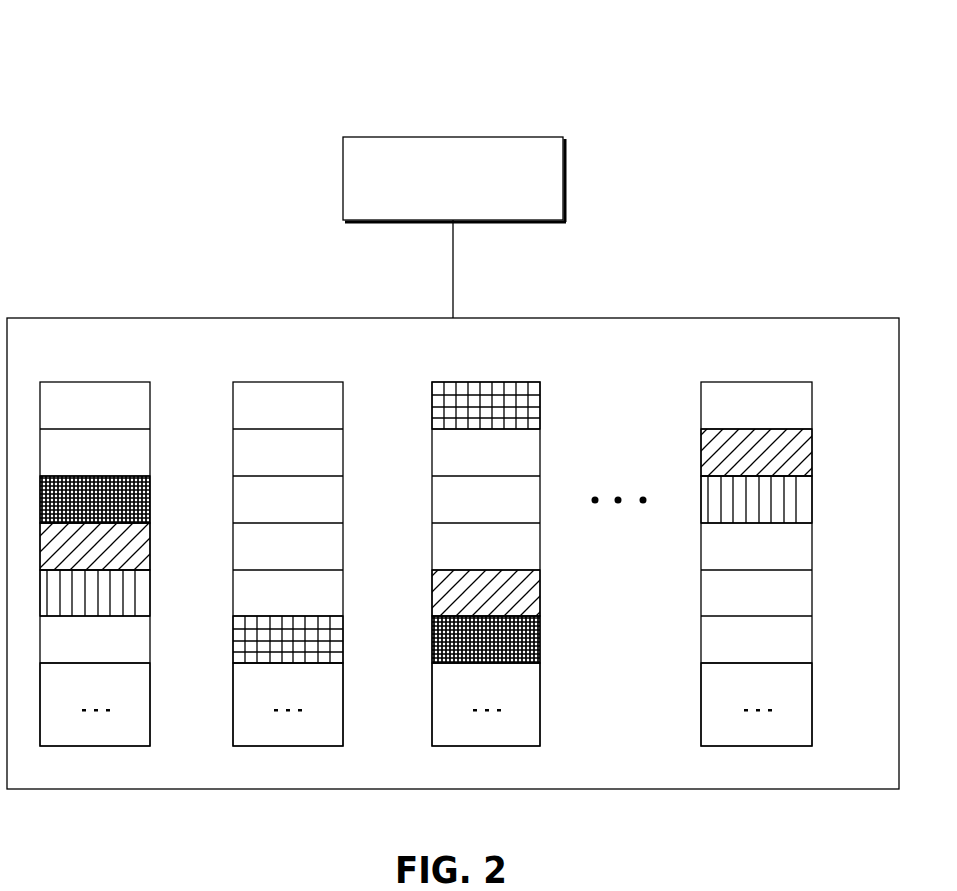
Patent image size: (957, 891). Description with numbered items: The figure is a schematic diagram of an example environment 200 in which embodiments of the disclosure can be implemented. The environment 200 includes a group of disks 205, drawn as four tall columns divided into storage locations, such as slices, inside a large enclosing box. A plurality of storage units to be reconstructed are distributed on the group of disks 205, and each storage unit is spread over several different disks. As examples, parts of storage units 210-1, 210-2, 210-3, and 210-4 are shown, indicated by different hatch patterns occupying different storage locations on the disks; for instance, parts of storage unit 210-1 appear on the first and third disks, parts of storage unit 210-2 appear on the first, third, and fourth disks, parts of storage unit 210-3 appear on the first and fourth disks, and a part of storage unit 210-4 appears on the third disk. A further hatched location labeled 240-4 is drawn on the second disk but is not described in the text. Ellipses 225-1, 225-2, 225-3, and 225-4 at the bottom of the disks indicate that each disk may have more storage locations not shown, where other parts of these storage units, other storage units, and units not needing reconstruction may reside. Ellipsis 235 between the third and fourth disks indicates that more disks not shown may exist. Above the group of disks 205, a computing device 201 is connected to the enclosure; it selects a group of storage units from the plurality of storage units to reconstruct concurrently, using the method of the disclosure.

The example environment 200 is at (118, 50).
The computing device 201 is at (563, 137).
The group of disks 205 is at (845, 318).
The storage unit 210-1 is at (150, 497).
The storage unit 210-2 is at (143, 545).
The storage unit 210-3 is at (138, 610).
The storage unit 210-4 is at (540, 405).
The data chunk 240-4 is at (343, 630).
The ellipsis 225-1 is at (115, 707).
The ellipsis 225-2 is at (311, 707).
The ellipsis 225-3 is at (510, 710).
The ellipsis 225-4 is at (775, 710).
The ellipsis 235 is at (612, 482).